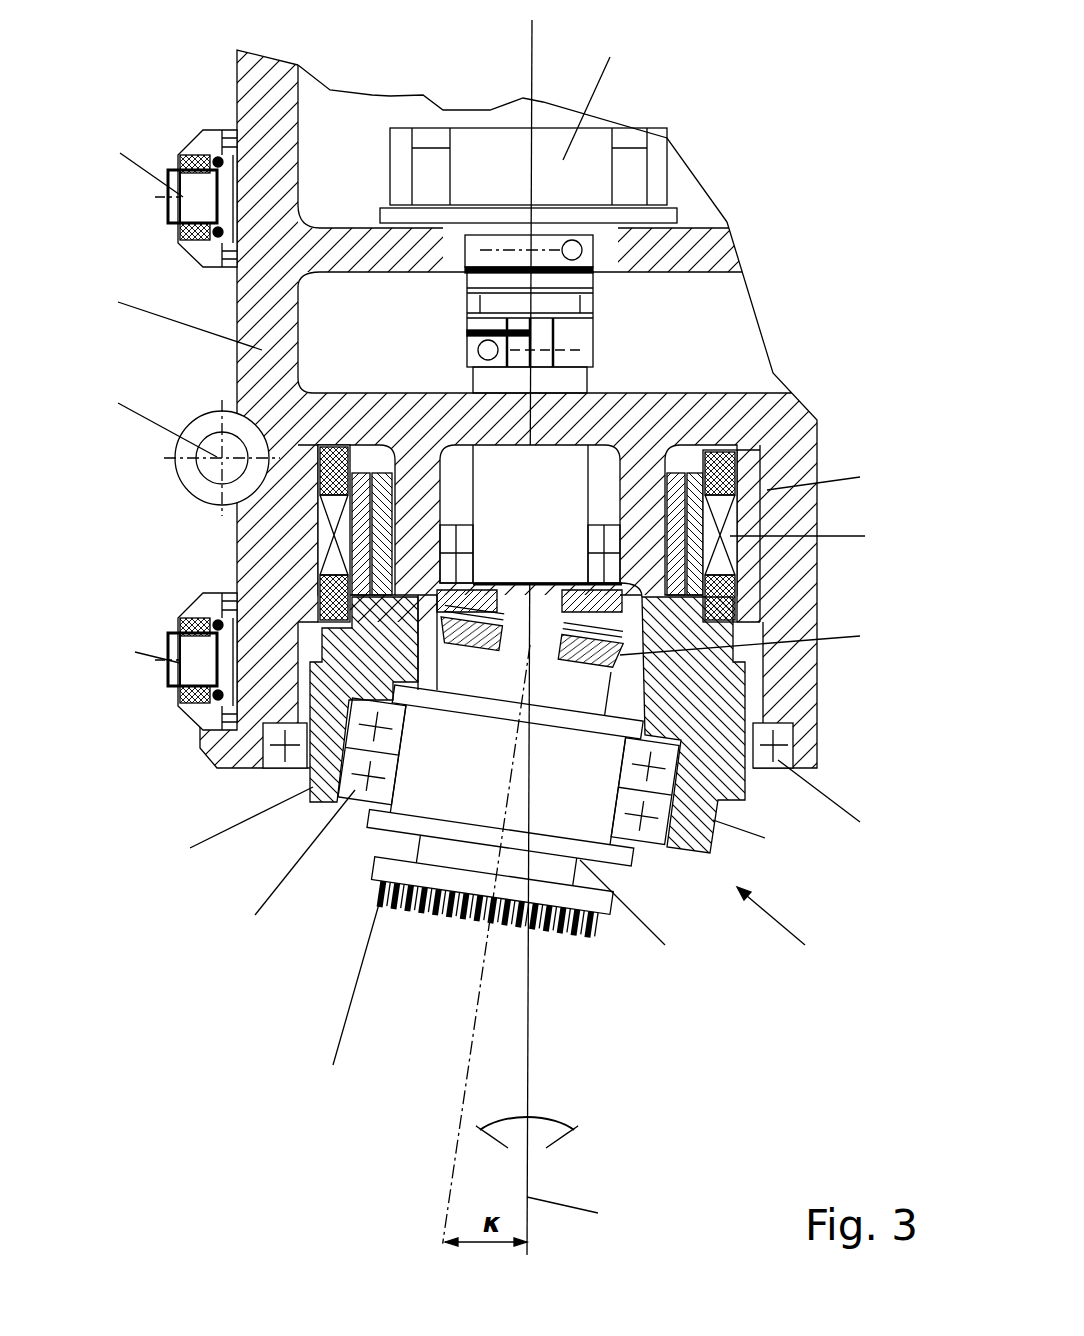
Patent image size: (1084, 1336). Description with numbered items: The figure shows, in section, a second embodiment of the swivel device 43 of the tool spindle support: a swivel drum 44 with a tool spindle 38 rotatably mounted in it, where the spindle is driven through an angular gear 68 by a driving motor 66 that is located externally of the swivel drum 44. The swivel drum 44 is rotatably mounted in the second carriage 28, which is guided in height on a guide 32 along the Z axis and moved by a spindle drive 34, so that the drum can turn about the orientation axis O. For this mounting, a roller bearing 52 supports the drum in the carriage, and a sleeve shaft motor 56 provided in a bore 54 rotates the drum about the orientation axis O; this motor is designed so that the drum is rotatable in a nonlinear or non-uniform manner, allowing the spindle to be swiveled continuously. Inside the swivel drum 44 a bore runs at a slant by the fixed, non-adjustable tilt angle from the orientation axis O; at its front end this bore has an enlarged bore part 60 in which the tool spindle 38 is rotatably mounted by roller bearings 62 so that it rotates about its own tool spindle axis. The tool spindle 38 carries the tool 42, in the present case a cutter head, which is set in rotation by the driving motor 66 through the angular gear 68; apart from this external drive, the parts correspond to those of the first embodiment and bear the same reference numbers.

The second carriage 28 is at (446, 409).
The guide 32 is at (158, 430).
The spindle drive 34 is at (174, 447).
The tool spindle 38 is at (534, 909).
The tool 42 is at (451, 991).
The swivel device 43 is at (574, 944).
The swivel drum 44 is at (280, 734).
The roller bearing 52 is at (579, 781).
The bore 54 is at (600, 533).
The sleeve shaft motor 56 is at (612, 533).
The enlarged bore part 60 is at (724, 728).
The roller bearings 62 is at (451, 821).
The driving motor 66 is at (512, 117).
The angular gear 68 is at (669, 625).
The orientation axis O is at (582, 1213).